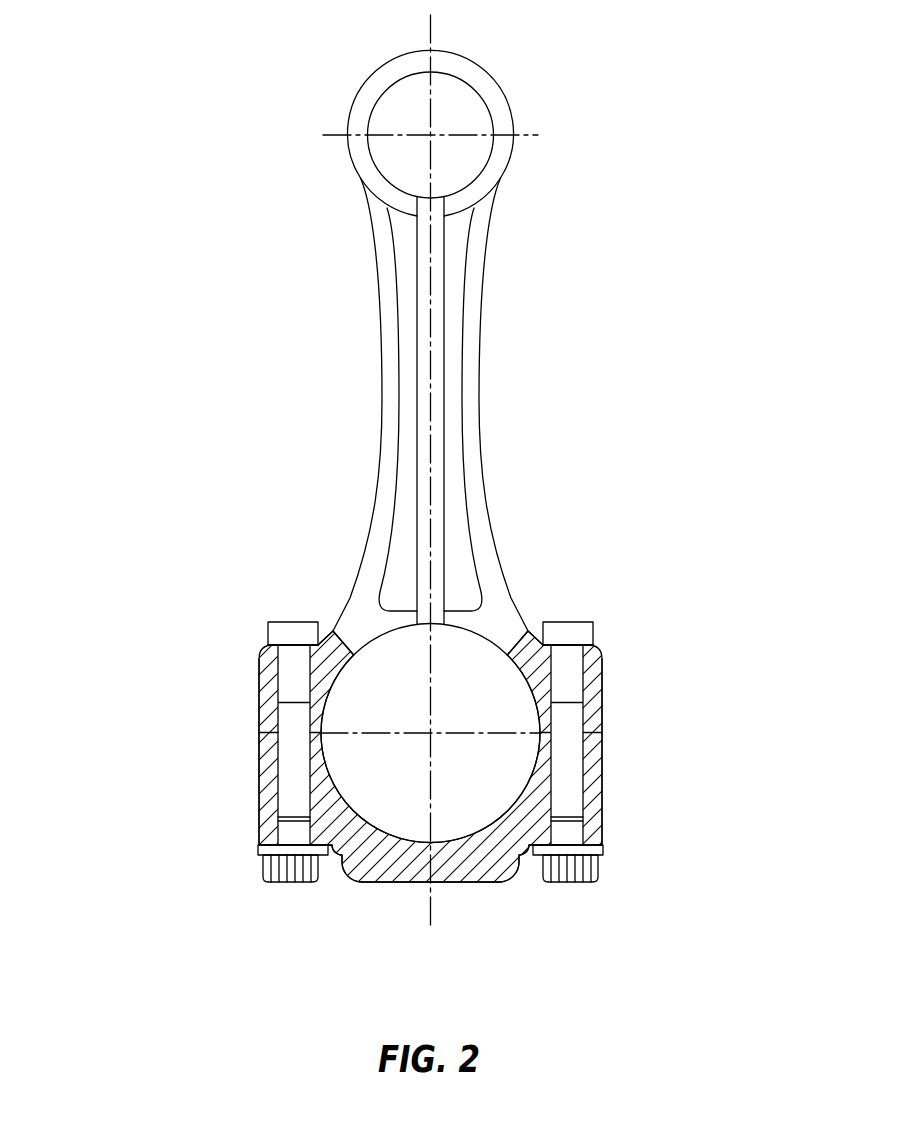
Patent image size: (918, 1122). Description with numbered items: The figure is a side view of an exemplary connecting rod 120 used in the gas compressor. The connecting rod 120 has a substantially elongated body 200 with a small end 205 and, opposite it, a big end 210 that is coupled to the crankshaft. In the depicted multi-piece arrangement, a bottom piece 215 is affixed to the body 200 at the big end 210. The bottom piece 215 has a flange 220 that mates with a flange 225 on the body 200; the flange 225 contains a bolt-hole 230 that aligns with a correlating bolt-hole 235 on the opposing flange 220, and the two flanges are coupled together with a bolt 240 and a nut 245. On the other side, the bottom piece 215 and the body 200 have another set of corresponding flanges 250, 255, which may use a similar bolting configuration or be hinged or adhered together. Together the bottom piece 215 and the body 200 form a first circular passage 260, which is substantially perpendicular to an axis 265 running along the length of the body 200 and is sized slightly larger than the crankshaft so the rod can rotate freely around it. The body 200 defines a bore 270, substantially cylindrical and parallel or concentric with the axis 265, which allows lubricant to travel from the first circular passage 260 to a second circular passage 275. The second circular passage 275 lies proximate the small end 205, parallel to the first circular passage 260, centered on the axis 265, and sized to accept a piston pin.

The connecting rod 120 is at (180, 113).
The body 200 is at (478, 448).
The small end 205 is at (578, 124).
The big end 210 is at (690, 878).
The bottom piece 215 is at (472, 876).
The flange 220 is at (258, 790).
The flange 225 is at (262, 706).
The bolt-hole 230 is at (262, 673).
The bolt-hole 235 is at (263, 806).
The bolt 240 is at (272, 868).
The nut 245 is at (282, 632).
The flange 250 is at (595, 685).
The flange 255 is at (595, 792).
The first circular passage 260 is at (470, 674).
The axis 265 is at (433, 33).
The bore 270 is at (417, 367).
The second circular passage 275 is at (385, 91).